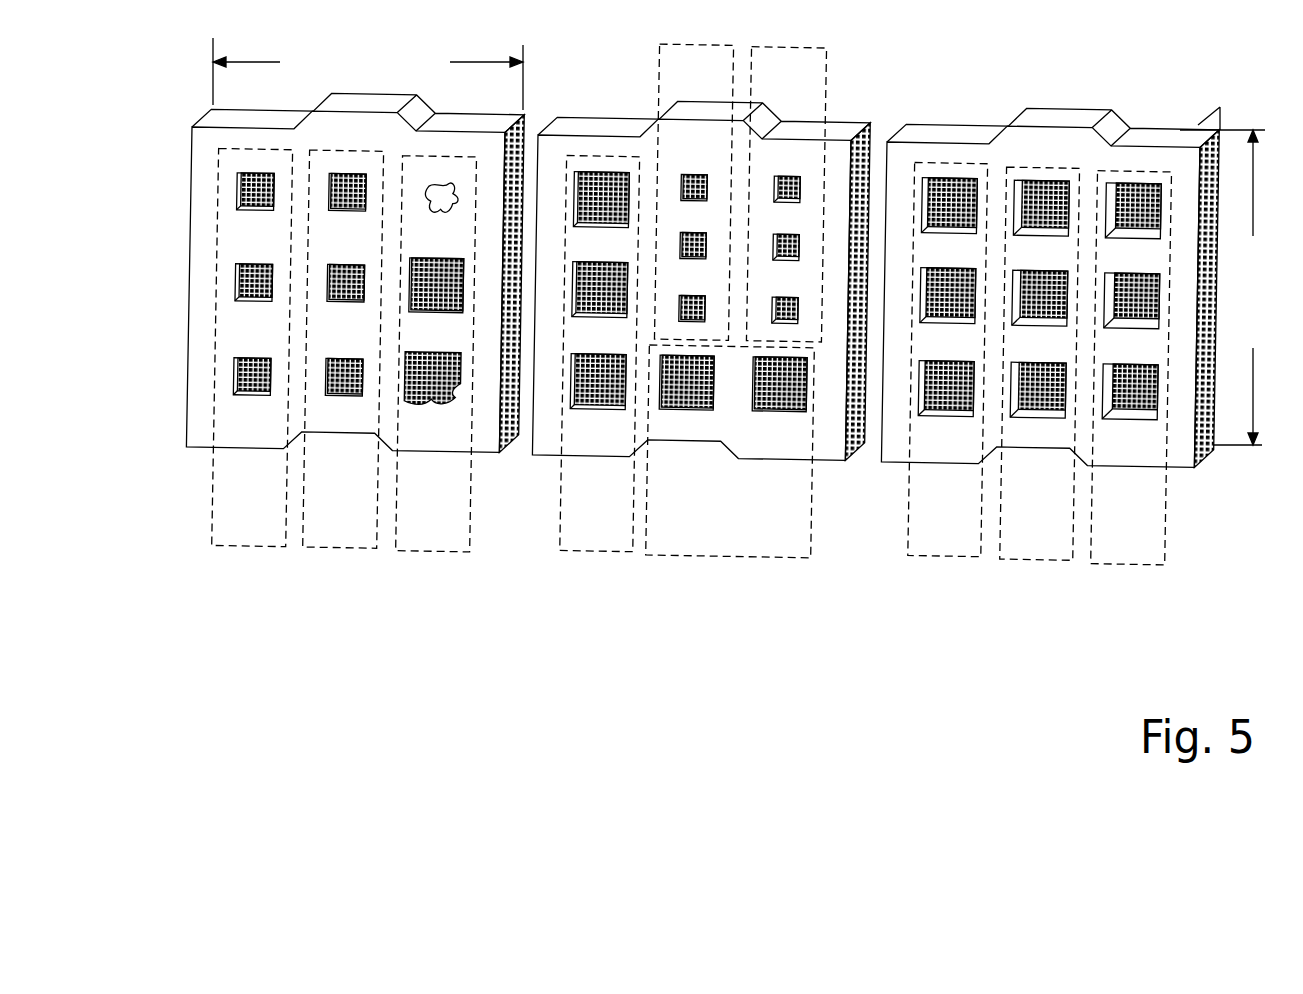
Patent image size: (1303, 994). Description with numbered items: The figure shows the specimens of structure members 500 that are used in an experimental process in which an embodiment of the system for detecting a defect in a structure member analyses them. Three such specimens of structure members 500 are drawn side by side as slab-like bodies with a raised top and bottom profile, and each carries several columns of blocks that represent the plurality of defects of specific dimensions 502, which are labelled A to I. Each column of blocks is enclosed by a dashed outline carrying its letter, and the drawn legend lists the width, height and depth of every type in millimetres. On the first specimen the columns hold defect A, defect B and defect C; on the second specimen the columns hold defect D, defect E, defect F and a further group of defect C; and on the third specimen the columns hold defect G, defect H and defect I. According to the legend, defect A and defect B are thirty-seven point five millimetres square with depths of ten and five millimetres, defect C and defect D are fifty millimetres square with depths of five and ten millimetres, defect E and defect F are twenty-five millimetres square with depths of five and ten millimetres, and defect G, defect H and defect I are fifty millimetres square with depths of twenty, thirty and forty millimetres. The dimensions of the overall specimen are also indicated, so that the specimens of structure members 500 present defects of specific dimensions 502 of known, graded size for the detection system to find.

The specimens of structure members 500 is at (717, 302).
The defects of specific dimensions 502 is at (1032, 590).
The defect A is at (252, 347).
The defect B is at (343, 349).
The defect C is at (436, 354).
The defect D is at (600, 354).
The defect E is at (693, 192).
The defect F is at (786, 194).
The defect G is at (948, 359).
The defect H is at (1040, 363).
The defect I is at (1131, 368).